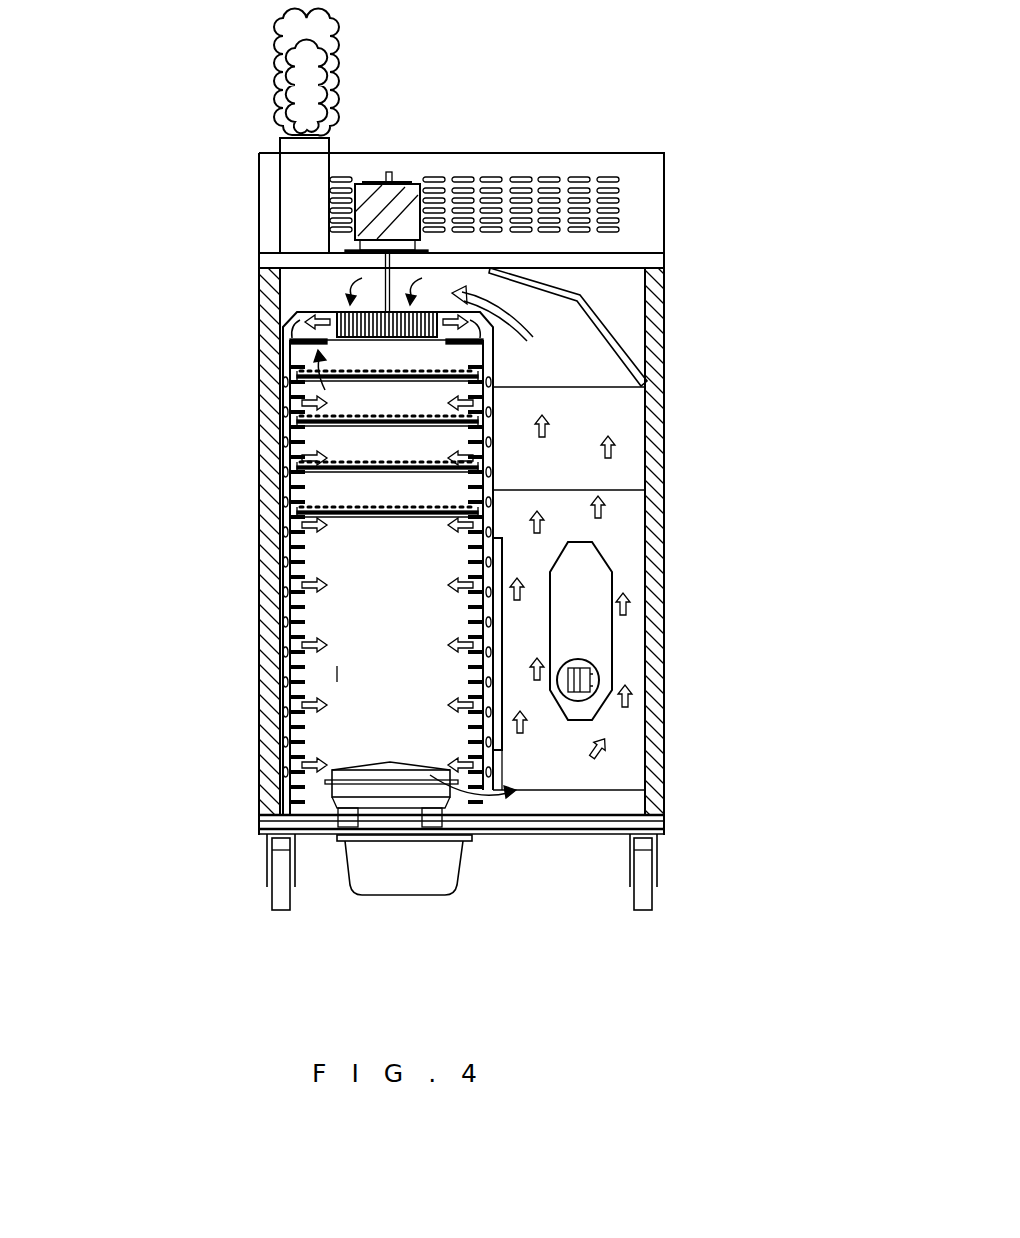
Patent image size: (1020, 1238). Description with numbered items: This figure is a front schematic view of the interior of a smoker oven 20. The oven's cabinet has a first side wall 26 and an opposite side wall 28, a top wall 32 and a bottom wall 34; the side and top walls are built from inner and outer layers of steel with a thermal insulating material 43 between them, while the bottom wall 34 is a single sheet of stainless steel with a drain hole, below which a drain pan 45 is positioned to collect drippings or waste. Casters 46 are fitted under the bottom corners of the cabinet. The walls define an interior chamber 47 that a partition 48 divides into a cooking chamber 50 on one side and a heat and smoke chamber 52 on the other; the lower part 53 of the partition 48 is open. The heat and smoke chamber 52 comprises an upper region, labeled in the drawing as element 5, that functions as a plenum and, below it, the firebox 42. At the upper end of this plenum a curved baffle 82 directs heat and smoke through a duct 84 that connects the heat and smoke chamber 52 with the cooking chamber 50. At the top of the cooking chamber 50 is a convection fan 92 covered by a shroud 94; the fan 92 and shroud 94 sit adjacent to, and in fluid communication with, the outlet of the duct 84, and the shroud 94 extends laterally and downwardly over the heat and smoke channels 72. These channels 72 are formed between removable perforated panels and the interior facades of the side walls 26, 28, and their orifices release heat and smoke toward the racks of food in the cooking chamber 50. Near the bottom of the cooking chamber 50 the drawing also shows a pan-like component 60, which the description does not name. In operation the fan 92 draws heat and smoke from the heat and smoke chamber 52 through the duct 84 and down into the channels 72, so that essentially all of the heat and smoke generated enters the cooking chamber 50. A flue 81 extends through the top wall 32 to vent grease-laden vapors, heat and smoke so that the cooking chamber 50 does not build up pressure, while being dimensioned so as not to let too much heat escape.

The oven 20 is at (410, 78).
The first side wall 26 is at (250, 613).
The top wall 32 is at (635, 264).
The flue 81 is at (318, 147).
The shroud 94 is at (444, 310).
The thermal insulating material 43 is at (273, 552).
The opposite side wall 28 is at (665, 430).
The interior chamber 47 is at (298, 284).
The convection fan 92 is at (297, 312).
The heat and smoke channel 72 is at (285, 362).
The cooking chamber 50 is at (337, 672).
The partition 48 is at (490, 790).
The curved baffle 82 is at (562, 292).
The duct 84 is at (482, 270).
The upper compartment 5 is at (617, 412).
The heat and smoke chamber 52 is at (632, 520).
The firebox 42 is at (612, 585).
The lower part of partition 53 is at (535, 800).
The water pan 60 is at (332, 772).
The bottom wall 34 is at (580, 820).
The drain pan 45 is at (413, 877).
The casters 46 is at (285, 901).